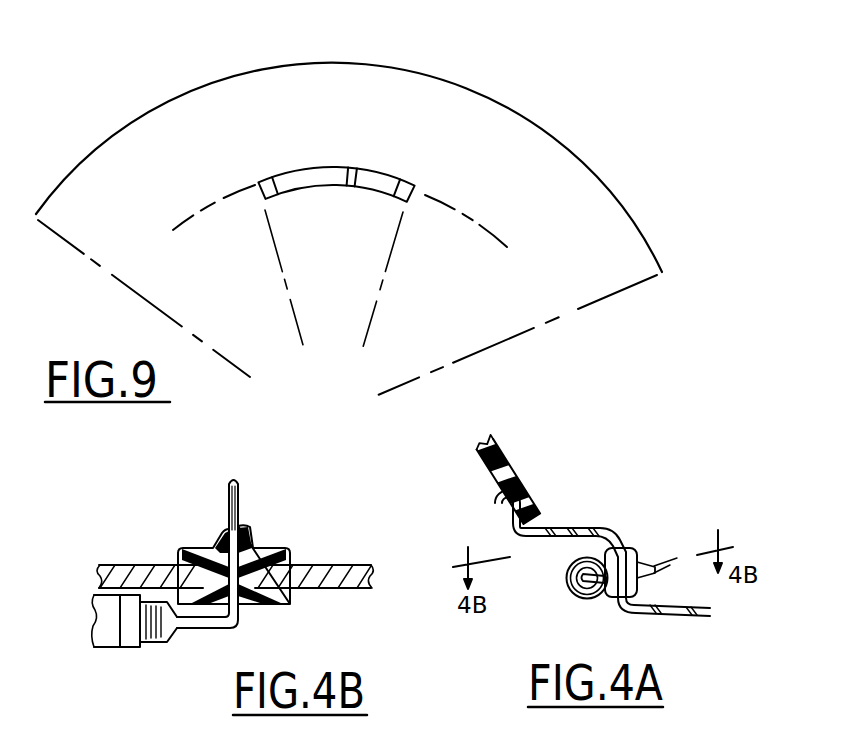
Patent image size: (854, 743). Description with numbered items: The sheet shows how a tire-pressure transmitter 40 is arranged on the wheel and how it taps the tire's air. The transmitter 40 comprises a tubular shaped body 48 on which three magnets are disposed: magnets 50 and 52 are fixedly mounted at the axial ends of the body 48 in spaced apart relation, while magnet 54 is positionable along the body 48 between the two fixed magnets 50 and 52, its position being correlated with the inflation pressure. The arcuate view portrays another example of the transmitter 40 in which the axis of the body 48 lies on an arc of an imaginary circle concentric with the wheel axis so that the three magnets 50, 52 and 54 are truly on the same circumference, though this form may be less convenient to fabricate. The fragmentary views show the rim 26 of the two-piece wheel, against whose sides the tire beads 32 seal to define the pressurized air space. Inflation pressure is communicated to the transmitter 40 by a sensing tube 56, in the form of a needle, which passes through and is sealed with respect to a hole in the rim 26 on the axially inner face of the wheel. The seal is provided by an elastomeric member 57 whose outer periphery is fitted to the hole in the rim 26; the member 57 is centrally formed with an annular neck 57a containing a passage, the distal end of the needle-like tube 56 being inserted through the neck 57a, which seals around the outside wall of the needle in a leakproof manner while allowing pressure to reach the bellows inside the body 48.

In FIG. 9, the transmitter 40 is at (318, 166).
In FIG. 4B, the transmitter 40 is at (168, 643).
In FIG. 4A, the transmitter 40 is at (567, 569).
In FIG. 9, the magnet 50 is at (265, 177).
In FIG. 9, the magnet 52 is at (407, 190).
In FIG. 9, the magnet 54 is at (353, 172).
In FIG. 4A, the rim 26 is at (511, 508).
In FIG. 4A, the beads 32 is at (532, 500).
In FIG. 4B, the body 48 is at (110, 648).
In FIG. 4A, the body 48 is at (566, 590).
In FIG. 4B, the sensing tube 56 is at (247, 630).
In FIG. 4A, the sensing tube 56 is at (583, 596).
In FIG. 4B, the elastomeric member 57 is at (288, 605).
In FIG. 4A, the elastomeric member 57 is at (628, 548).
In FIG. 4B, the annular neck 57a is at (252, 536).
In FIG. 4A, the annular neck 57a is at (645, 573).